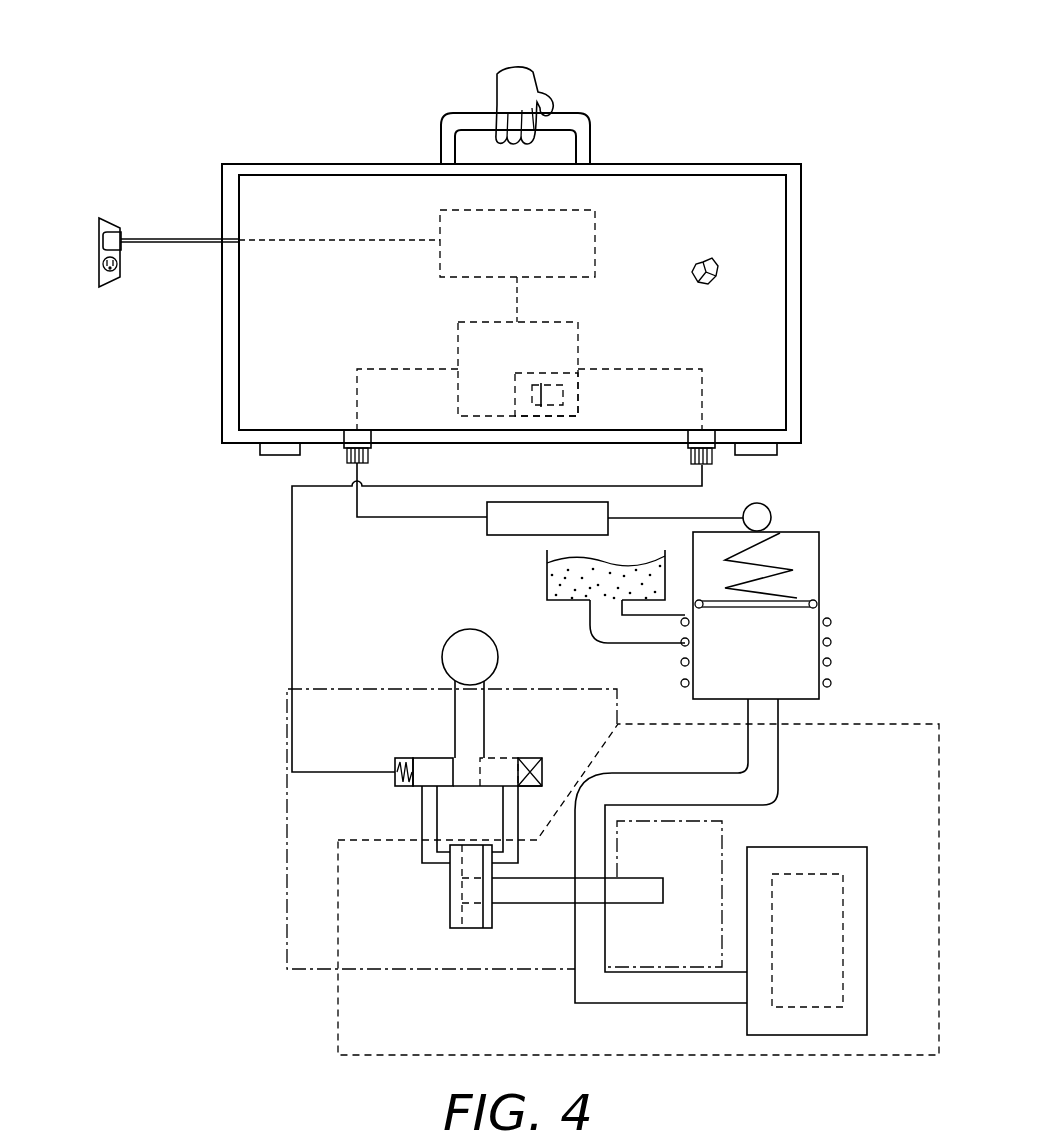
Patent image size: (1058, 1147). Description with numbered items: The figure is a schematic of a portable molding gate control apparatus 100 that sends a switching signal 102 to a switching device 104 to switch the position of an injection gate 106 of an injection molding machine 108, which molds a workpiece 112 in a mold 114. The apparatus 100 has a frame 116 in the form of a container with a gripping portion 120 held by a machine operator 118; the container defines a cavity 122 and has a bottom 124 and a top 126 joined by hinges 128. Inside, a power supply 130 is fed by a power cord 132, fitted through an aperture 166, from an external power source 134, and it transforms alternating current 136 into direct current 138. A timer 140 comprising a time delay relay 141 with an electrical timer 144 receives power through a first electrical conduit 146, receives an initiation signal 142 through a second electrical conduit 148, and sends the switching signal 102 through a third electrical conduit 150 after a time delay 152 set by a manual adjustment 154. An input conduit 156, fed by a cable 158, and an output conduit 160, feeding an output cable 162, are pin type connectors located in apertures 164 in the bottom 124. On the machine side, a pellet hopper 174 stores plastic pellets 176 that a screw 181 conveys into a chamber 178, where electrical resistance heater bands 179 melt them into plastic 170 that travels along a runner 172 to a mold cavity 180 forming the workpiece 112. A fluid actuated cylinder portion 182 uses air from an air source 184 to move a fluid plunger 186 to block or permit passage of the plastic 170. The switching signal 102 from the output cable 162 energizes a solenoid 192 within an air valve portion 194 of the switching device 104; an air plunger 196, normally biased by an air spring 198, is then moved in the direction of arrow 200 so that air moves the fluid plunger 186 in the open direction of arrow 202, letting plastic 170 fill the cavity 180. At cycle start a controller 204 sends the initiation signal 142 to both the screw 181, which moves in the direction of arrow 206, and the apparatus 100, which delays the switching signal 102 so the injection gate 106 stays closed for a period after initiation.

The portable molding gate control apparatus 100 is at (639, 46).
The switching signal 102 is at (305, 578).
The switching device 104 is at (678, 679).
The injection gate 106 is at (334, 851).
The injection molding machine 108 is at (888, 494).
The workpiece 112 is at (845, 942).
The mold 114 is at (873, 722).
The frame 116 is at (800, 165).
The machine operator 118 is at (528, 76).
The gripping portion 120 is at (591, 122).
The cavity 122 is at (714, 284).
The bottom 124 is at (714, 262).
The top 126 is at (767, 361).
The hinges 128 is at (277, 458).
The power supply 130 is at (596, 212).
The power cord 132 is at (145, 240).
The power source 134 is at (116, 282).
The alternating current 136 is at (148, 252).
The direct current 138 is at (507, 285).
The timer 140 is at (600, 304).
The time delay relay 141 is at (584, 337).
The initiation signal 142 is at (366, 497).
The electrical timer 144 is at (570, 367).
The first electrical conduit 146 is at (520, 303).
The second electrical conduit 148 is at (424, 368).
The third electrical conduit 150 is at (684, 368).
The time delay 152 is at (564, 392).
The manual adjustment 154 is at (528, 373).
The input conduit 156 is at (352, 428).
The cable 158 is at (410, 518).
The output conduit 160 is at (710, 428).
The output cable 162 is at (291, 592).
The apertures 164 is at (374, 447).
The aperture 166 is at (248, 248).
The plastic 170 is at (762, 670).
The runner 172 is at (660, 772).
The pellet hopper 174 is at (546, 576).
The plastic pellets 176 is at (608, 562).
The chamber 178 is at (710, 672).
The electrical resistance heater bands 179 is at (834, 647).
The mold cavity 180 is at (848, 866).
The screw 181 is at (848, 584).
The fluid actuated cylinder portion 182 is at (700, 857).
The air source 184 is at (497, 640).
The fluid plunger 186 is at (561, 905).
The solenoid 192 is at (546, 762).
The air valve portion 194 is at (555, 724).
The air plunger 196 is at (441, 800).
The air spring 198 is at (402, 780).
The arrow 200 is at (462, 743).
The arrow 202 is at (626, 890).
The controller 204 is at (490, 537).
The arrow 206 is at (760, 612).